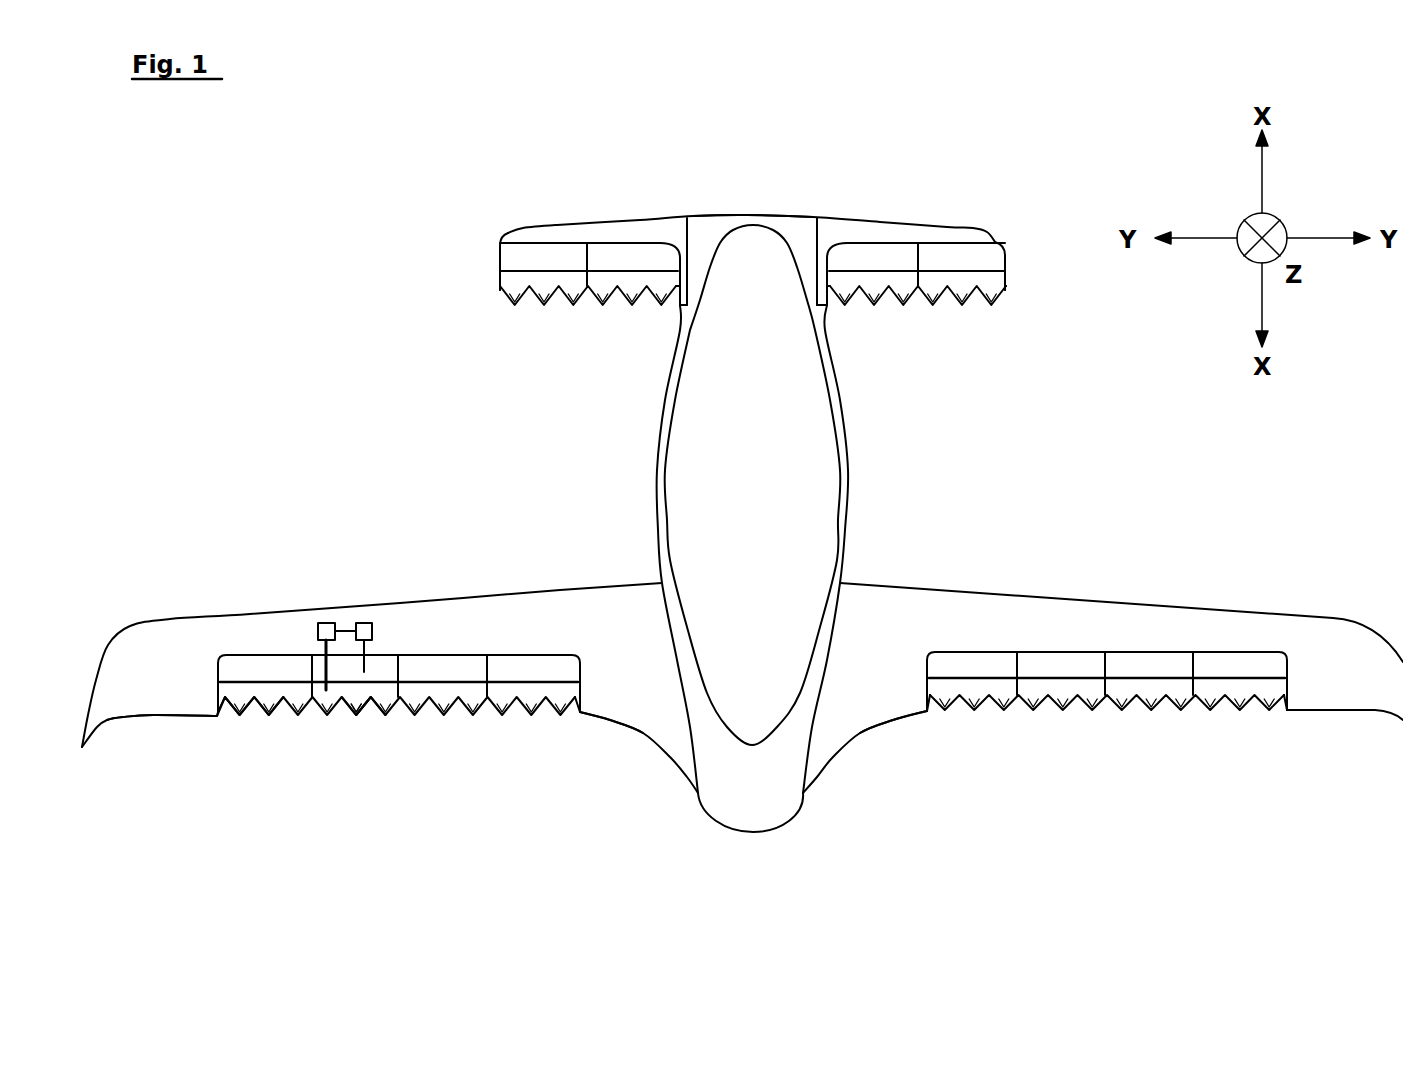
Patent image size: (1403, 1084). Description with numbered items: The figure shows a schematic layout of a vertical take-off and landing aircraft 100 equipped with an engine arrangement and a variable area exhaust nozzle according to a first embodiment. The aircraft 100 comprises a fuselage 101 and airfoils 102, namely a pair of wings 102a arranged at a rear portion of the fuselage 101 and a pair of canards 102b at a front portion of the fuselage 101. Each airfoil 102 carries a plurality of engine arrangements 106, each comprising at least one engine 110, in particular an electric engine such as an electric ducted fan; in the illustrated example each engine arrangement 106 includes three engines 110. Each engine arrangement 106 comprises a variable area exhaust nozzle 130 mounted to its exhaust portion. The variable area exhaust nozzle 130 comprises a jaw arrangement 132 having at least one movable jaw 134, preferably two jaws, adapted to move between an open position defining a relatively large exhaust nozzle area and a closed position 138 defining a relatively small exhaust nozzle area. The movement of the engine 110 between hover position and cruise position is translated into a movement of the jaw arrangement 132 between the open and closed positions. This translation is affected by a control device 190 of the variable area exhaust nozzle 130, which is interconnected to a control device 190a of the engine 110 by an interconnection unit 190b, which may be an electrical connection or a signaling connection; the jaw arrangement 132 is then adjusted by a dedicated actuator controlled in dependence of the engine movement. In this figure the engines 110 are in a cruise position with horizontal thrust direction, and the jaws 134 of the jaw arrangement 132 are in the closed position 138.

The vertical take-off and landing aircraft 100 is at (374, 337).
The fuselage 101 is at (822, 407).
The airfoil 102 is at (560, 192).
The wing 102a is at (917, 757).
The canard 102b is at (750, 174).
The engine arrangement 106 is at (367, 738).
The engine 110 is at (352, 729).
The variable area exhaust nozzle 130 is at (390, 665).
The jaw arrangement 132 is at (383, 706).
The jaw 134 is at (334, 708).
The closed position 138 is at (261, 735).
The control device 190 is at (312, 608).
The control device of the engine 190a is at (366, 610).
The interconnection unit 190b is at (347, 610).